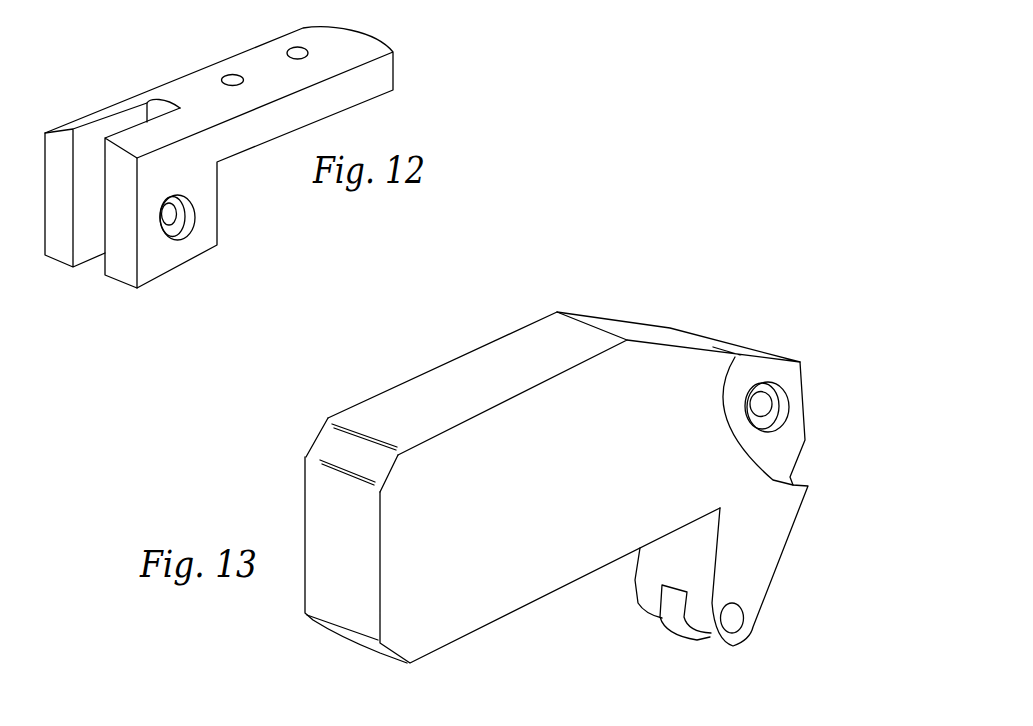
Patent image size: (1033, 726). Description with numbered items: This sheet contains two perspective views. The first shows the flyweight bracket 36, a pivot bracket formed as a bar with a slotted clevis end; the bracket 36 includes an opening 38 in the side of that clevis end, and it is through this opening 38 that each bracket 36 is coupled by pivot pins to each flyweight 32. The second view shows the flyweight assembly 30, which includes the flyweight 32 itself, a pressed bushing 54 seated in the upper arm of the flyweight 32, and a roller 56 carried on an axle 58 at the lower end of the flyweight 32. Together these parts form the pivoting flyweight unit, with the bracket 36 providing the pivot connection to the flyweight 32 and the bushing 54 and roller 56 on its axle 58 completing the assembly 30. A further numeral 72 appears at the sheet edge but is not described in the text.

In FIG. 13, the flyweight assembly 30 is at (577, 447).
In FIG. 13, the flyweight 32 is at (466, 380).
In FIG. 12, the flyweight bracket 36 is at (163, 82).
In FIG. 12, the opening 38 is at (196, 208).
In FIG. 13, the pressed bushing 54 is at (773, 407).
In FIG. 13, the roller 56 is at (675, 625).
In FIG. 13, the axle 58 is at (733, 620).
In FIG. 13, the element 72 is at (99, 720).